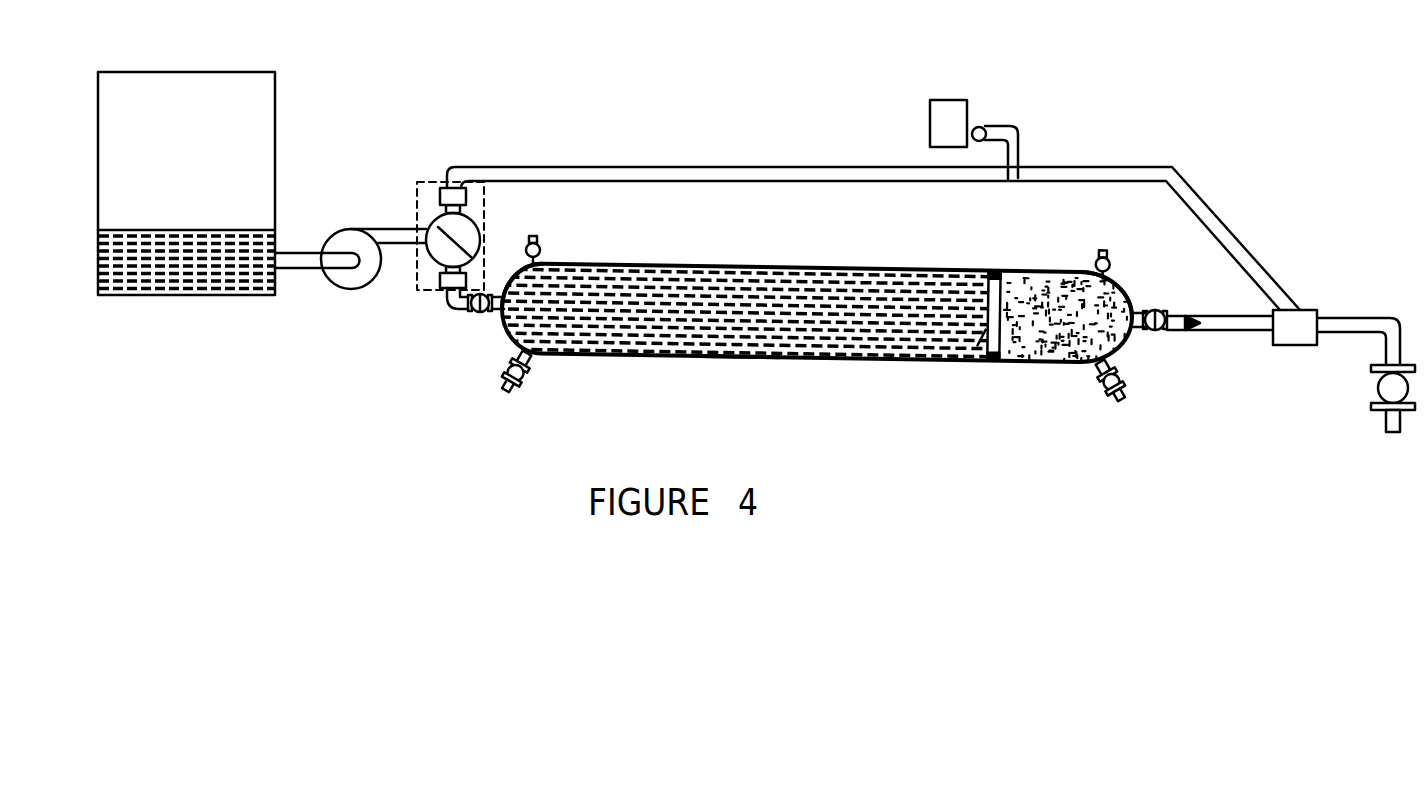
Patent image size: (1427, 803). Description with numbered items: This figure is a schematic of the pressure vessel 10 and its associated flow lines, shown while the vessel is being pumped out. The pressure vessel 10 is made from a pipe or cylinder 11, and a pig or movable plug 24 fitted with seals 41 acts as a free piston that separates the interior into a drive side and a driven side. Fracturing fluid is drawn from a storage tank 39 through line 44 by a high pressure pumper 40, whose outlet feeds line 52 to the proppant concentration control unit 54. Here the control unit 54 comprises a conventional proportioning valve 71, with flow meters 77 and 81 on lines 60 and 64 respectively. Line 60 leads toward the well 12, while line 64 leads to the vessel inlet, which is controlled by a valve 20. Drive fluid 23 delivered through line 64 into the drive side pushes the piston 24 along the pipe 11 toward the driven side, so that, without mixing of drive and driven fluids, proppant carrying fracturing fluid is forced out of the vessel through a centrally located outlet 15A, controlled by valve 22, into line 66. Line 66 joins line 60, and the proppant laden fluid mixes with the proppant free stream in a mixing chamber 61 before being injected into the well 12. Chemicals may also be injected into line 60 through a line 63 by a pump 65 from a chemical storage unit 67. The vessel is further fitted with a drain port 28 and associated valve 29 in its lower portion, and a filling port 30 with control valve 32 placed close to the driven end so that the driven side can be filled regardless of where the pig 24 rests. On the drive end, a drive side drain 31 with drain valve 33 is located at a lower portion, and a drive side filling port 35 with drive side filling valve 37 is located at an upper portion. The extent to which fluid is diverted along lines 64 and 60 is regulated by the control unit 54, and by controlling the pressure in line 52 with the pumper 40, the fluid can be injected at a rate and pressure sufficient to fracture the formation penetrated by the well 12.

The fracturing fluid storage tank 39 is at (190, 72).
The drive fluid 23 is at (162, 245).
The line 44 is at (290, 252).
The high pressure pumper 40 is at (357, 288).
The line 52 is at (373, 229).
The proppant concentration control unit 54 is at (437, 182).
The proportioning valve 71 is at (438, 262).
The flow meter 77 is at (466, 190).
The flow meter 81 is at (445, 286).
The valve 20 is at (494, 296).
The outlet line 64 is at (466, 313).
The line 60 is at (686, 170).
The chemical storage unit 67 is at (940, 100).
The pump 65 is at (985, 128).
The line 63 is at (1022, 152).
The pressure vessel 10 is at (672, 367).
The pipe or cylinder 11 is at (740, 360).
The drive side filling port 35 is at (548, 262).
The drive side filling valve 37 is at (541, 256).
The drive side drain 31 is at (530, 356).
The drain valve 33 is at (515, 372).
The seals 41 is at (998, 278).
The pig or movable plug 24 is at (992, 343).
The control valve 32 is at (1102, 258).
The filling port 30 is at (1110, 278).
The drain port 28 is at (1095, 370).
The valve 29 is at (1105, 397).
The centrally located outlet 15A is at (1140, 313).
The valve 22 is at (1157, 332).
The line 66 is at (1258, 332).
The mixing chamber 61 is at (1302, 310).
The well 12 is at (1377, 388).